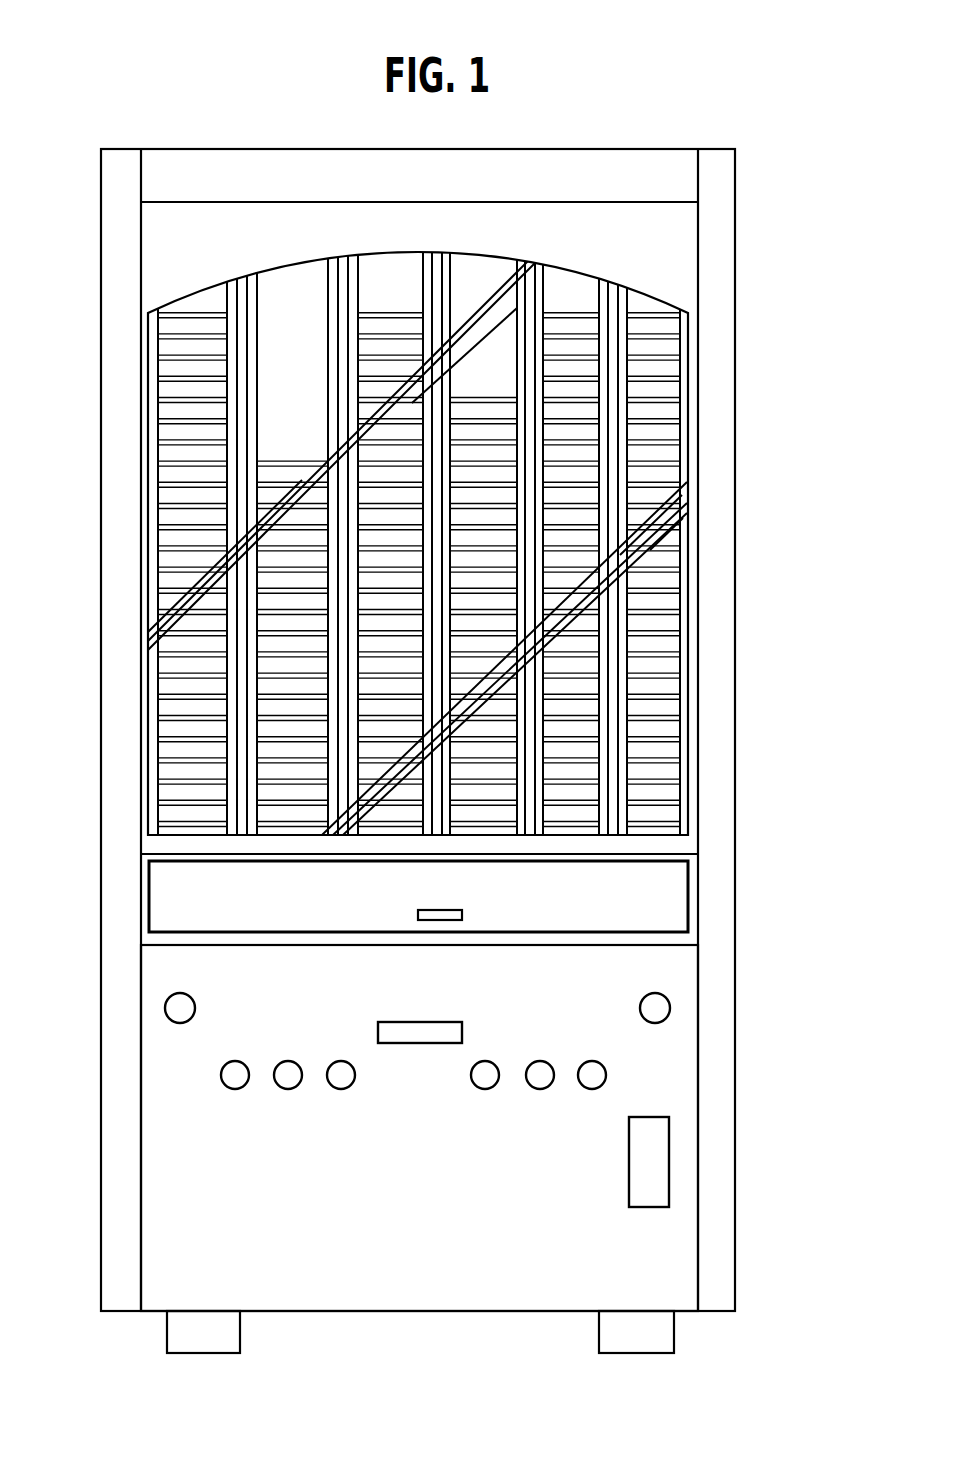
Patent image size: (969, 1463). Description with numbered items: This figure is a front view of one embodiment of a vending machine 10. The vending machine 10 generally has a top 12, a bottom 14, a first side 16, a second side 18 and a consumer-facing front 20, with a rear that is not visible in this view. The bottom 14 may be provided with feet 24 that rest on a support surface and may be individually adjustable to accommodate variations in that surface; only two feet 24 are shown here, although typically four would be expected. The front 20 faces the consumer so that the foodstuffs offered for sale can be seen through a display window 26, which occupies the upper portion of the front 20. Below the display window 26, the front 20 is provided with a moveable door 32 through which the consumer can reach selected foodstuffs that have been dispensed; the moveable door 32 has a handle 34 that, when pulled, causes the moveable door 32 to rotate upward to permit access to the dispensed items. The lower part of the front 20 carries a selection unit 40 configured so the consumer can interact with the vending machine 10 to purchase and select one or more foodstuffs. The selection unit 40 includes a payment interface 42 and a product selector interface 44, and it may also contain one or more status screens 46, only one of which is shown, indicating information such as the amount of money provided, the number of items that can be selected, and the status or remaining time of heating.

The vending machine 10 is at (739, 79).
The top 12 is at (607, 148).
The bottom 14 is at (402, 1312).
The first side 16 is at (100, 723).
The second side 18 is at (736, 680).
The front 20 is at (163, 1199).
The feet 24 is at (180, 1333).
The display window 26 is at (279, 391).
The moveable door 32 is at (581, 919).
The handle 34 is at (437, 912).
The selection unit 40 is at (316, 1100).
The payment interface 42 is at (628, 1152).
The product selector interface 44 is at (343, 1078).
The status screen 46 is at (415, 1032).